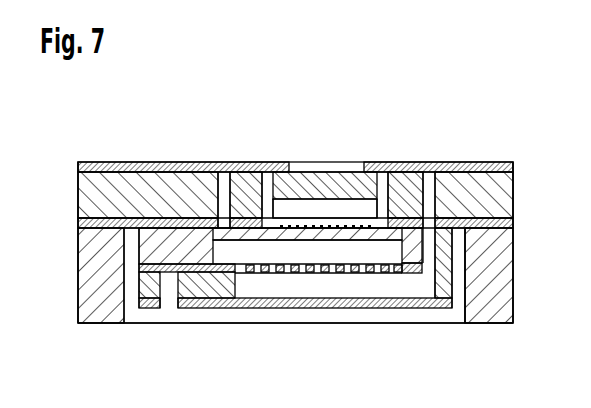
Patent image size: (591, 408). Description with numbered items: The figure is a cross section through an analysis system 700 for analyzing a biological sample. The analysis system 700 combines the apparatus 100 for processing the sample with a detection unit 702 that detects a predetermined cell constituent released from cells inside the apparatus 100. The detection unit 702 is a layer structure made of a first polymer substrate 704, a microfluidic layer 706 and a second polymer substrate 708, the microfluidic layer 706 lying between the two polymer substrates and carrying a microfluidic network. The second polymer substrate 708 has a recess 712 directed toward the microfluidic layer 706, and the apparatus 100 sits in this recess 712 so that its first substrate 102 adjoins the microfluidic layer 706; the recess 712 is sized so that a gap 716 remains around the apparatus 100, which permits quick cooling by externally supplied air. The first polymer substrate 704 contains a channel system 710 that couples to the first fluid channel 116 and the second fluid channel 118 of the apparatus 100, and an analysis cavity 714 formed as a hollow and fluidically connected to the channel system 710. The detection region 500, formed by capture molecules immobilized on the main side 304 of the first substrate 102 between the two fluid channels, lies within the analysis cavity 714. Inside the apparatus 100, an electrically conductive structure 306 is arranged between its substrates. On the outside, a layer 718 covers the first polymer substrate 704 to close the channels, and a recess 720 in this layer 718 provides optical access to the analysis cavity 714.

The analysis system 700 is at (97, 137).
The apparatus 100 is at (469, 253).
The first substrate 102 is at (158, 248).
The first fluid channel 116 is at (231, 232).
The main side 304 is at (245, 205).
The recess 720 is at (298, 171).
The analysis cavity 714 is at (325, 204).
The detection region 500 is at (360, 236).
The channel system 710 is at (395, 202).
The second fluid channel 118 is at (431, 200).
The layer 718 is at (494, 165).
The first polymer substrate 704 is at (78, 204).
The microfluidic layer 706 is at (78, 223).
The second polymer substrate 708 is at (80, 254).
The detection unit 702 is at (70, 312).
The gap 716 is at (136, 297).
The electrically conductive structure 306 is at (357, 274).
The recess 712 is at (465, 300).